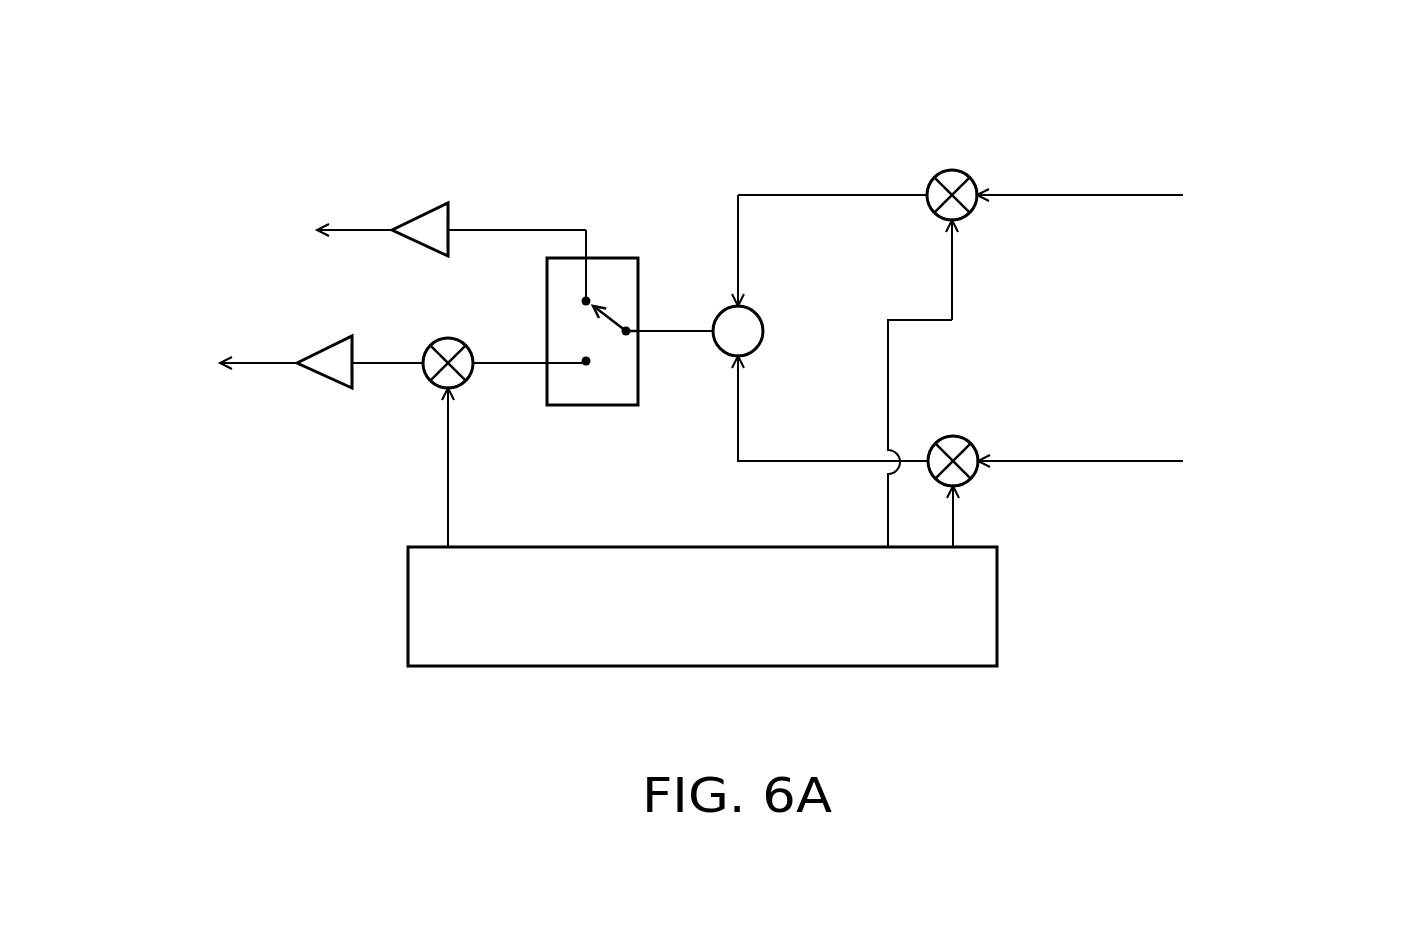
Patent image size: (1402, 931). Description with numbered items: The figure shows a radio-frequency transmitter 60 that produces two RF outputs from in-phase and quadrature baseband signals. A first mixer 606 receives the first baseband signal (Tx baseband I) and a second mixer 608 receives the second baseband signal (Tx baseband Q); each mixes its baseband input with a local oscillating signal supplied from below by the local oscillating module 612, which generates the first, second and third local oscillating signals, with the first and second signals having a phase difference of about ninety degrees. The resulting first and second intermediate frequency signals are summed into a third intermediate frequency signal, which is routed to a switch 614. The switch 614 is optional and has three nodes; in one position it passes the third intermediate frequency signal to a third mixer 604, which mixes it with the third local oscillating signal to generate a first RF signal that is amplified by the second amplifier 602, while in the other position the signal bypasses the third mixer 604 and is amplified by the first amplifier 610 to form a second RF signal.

The radio-frequency transmitter 60 is at (1233, 93).
The second amplifier 602 is at (325, 346).
The third mixer 604 is at (449, 338).
The first mixer 606 is at (940, 173).
The second mixer 608 is at (942, 438).
The first amplifier 610 is at (420, 213).
The local oscillating module 612 is at (997, 606).
The switch 614 is at (612, 258).